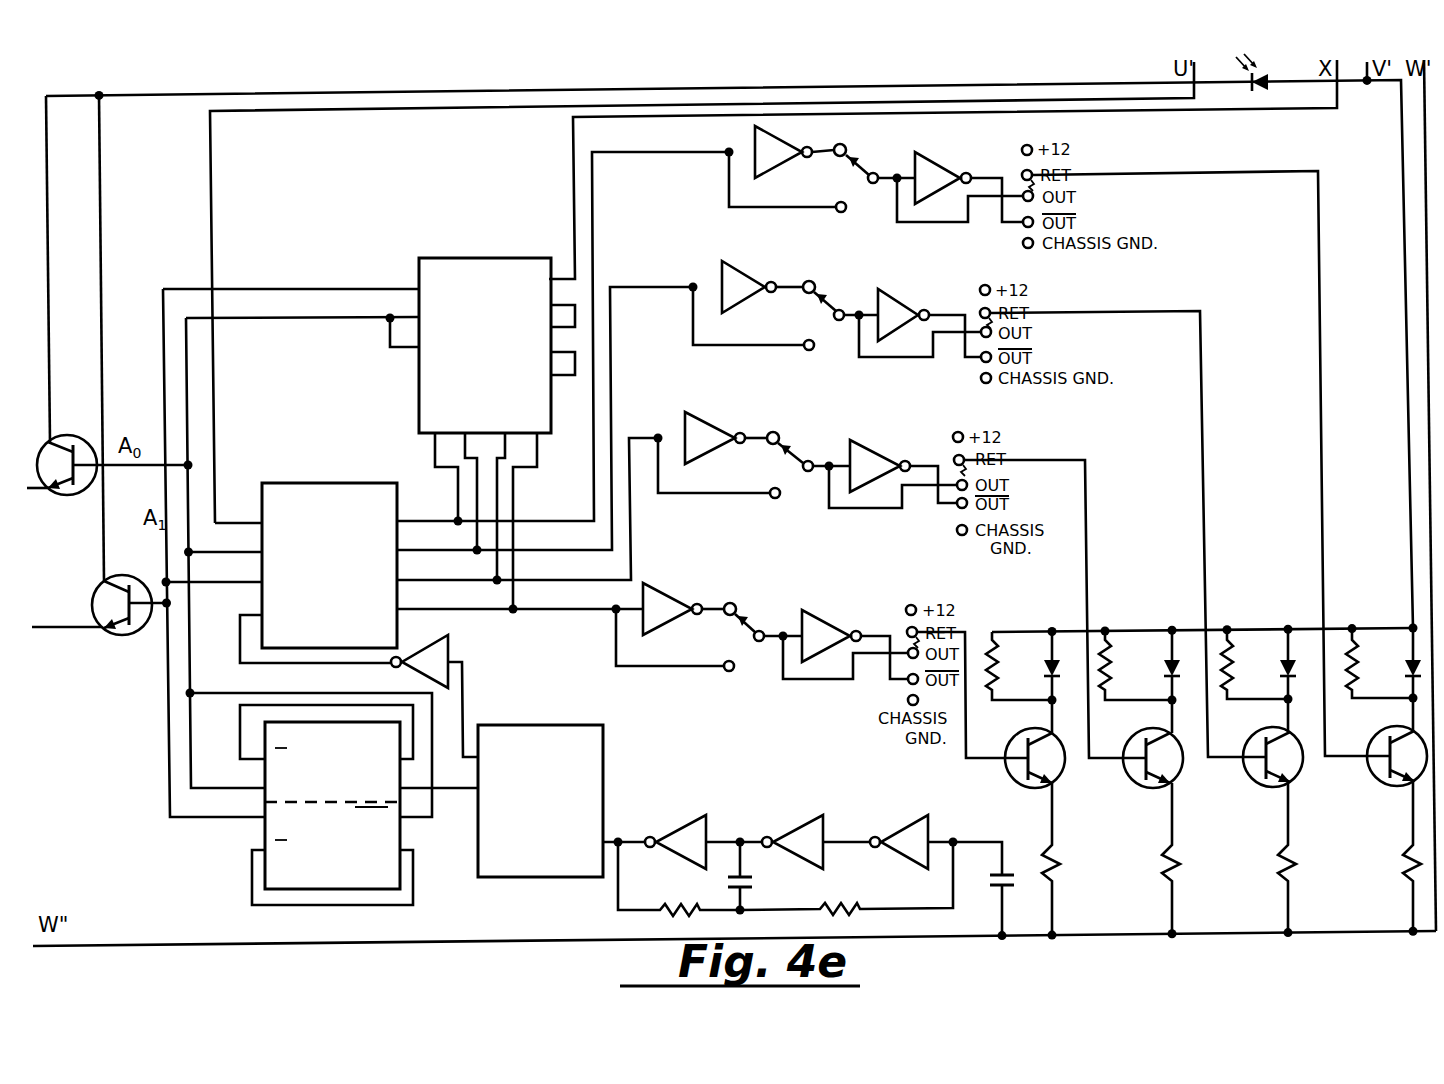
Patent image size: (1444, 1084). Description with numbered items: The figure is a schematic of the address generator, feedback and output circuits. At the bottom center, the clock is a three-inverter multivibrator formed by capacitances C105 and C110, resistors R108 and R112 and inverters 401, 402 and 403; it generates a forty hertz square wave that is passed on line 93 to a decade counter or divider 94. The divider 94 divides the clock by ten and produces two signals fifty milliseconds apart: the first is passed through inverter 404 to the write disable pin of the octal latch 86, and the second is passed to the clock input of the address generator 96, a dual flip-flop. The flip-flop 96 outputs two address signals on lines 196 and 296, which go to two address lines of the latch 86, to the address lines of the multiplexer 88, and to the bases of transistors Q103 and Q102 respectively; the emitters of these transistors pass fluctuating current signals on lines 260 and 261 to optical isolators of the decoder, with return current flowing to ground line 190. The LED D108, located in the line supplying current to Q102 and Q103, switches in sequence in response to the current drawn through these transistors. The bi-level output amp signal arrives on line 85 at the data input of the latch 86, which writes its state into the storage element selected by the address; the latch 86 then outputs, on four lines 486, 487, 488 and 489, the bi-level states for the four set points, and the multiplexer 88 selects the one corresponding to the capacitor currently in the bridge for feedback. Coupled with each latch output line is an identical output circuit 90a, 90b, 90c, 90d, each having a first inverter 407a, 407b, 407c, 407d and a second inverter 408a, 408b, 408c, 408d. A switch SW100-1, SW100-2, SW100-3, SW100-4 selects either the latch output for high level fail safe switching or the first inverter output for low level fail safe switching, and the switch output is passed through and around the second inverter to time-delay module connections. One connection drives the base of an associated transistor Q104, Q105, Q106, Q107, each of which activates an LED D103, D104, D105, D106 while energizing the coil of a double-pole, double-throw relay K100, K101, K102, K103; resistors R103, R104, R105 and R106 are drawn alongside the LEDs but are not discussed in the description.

The line 85 is at (215, 405).
The latch 86 is at (331, 500).
The multiplexer 88 is at (475, 279).
The decade counter or divider 94 is at (580, 753).
The line 93 is at (612, 840).
The address generator 96 is at (268, 826).
The address line 196 is at (192, 760).
The address line 296 is at (168, 752).
The line 260 is at (45, 498).
The line 261 is at (77, 624).
The ground line 190 is at (186, 944).
The inverter 404 is at (432, 657).
The inverter 403 is at (684, 828).
The inverter 402 is at (800, 828).
The inverter 401 is at (888, 828).
The latch output line 486 is at (566, 520).
The latch output line 487 is at (566, 550).
The latch output line 488 is at (570, 580).
The latch output line 489 is at (572, 609).
The first inverter 407a is at (774, 153).
The first inverter 407b is at (736, 282).
The first inverter 407c is at (712, 434).
The first inverter 407d is at (668, 600).
The second inverter 408a is at (938, 180).
The second inverter 408b is at (902, 316).
The second inverter 408c is at (868, 463).
The second inverter 408d is at (838, 632).
The output circuit 90a is at (725, 212).
The output circuit 90b is at (697, 366).
The output circuit 90c is at (710, 534).
The output circuit 90d is at (754, 588).
The switch SW100-1 is at (894, 151).
The switch SW100-2 is at (860, 285).
The switch SW100-3 is at (826, 437).
The switch SW100-4 is at (785, 606).
The transistor Q102 is at (124, 640).
The transistor Q103 is at (72, 490).
The transistor Q104 is at (1010, 772).
The transistor Q105 is at (1134, 773).
The transistor Q106 is at (1254, 773).
The transistor Q107 is at (1370, 773).
The LED D103 is at (1046, 675).
The LED D104 is at (1166, 675).
The LED D105 is at (1283, 675).
The LED D106 is at (1408, 675).
The LED D108 is at (1264, 92).
The resistor R103 is at (990, 655).
The resistor R104 is at (1137, 665).
The resistor R105 is at (1258, 664).
The resistor R106 is at (1383, 663).
The resistor R108 is at (845, 904).
The resistor R112 is at (688, 905).
The capacitance C105 is at (753, 882).
The capacitance C110 is at (1010, 873).
The relay K100 is at (1403, 862).
The relay K101 is at (1296, 870).
The relay K102 is at (1180, 868).
The relay K103 is at (1060, 868).